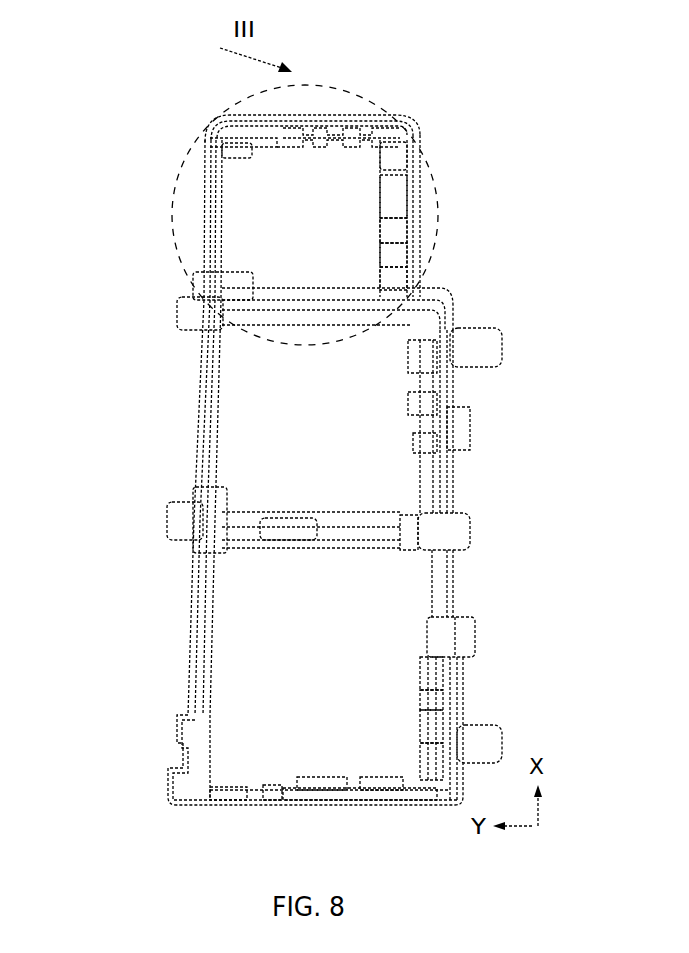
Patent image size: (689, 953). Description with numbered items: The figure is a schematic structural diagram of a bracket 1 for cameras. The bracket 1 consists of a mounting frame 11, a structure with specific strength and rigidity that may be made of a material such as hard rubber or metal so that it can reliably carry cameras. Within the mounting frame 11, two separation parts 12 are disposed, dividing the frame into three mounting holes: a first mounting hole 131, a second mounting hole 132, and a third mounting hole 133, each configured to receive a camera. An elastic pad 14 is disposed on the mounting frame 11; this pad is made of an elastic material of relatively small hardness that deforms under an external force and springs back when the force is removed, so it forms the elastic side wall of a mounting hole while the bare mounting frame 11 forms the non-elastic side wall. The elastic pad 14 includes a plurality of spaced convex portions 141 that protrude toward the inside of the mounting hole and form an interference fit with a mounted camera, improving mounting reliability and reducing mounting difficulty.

The bracket 1 is at (124, 109).
The mounting frame 11 is at (310, 108).
The separation part 12 is at (385, 290).
The first mounting hole 131 is at (213, 248).
The second mounting hole 132 is at (215, 405).
The third mounting hole 133 is at (215, 638).
The elastic pad 14 is at (385, 123).
The convex portion 141 is at (470, 421).